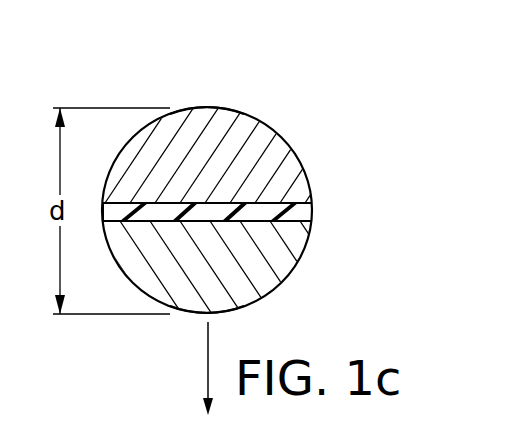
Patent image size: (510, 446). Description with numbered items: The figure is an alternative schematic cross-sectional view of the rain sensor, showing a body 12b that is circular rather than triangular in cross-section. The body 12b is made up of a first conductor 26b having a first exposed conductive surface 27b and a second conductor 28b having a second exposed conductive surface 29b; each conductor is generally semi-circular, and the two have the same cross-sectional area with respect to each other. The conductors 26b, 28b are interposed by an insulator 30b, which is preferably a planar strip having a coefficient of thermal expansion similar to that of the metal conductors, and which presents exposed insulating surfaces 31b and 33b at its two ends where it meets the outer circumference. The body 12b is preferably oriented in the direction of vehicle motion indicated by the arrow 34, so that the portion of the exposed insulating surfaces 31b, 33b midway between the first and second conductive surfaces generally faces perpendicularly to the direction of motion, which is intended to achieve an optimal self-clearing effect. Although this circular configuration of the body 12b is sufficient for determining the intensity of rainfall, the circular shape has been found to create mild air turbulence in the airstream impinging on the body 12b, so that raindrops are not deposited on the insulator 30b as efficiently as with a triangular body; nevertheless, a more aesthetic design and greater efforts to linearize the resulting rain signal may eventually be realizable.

The body 12b is at (290, 118).
The first conductor 26b is at (267, 262).
The first exposed conductive surface 27b is at (268, 294).
The second conductor 28b is at (271, 162).
The second exposed conductive surface 29b is at (223, 108).
The insulator 30b is at (278, 203).
The exposed insulating surface 31b is at (102, 212).
The exposed insulating surface 33b is at (313, 209).
The arrow 34 is at (208, 348).